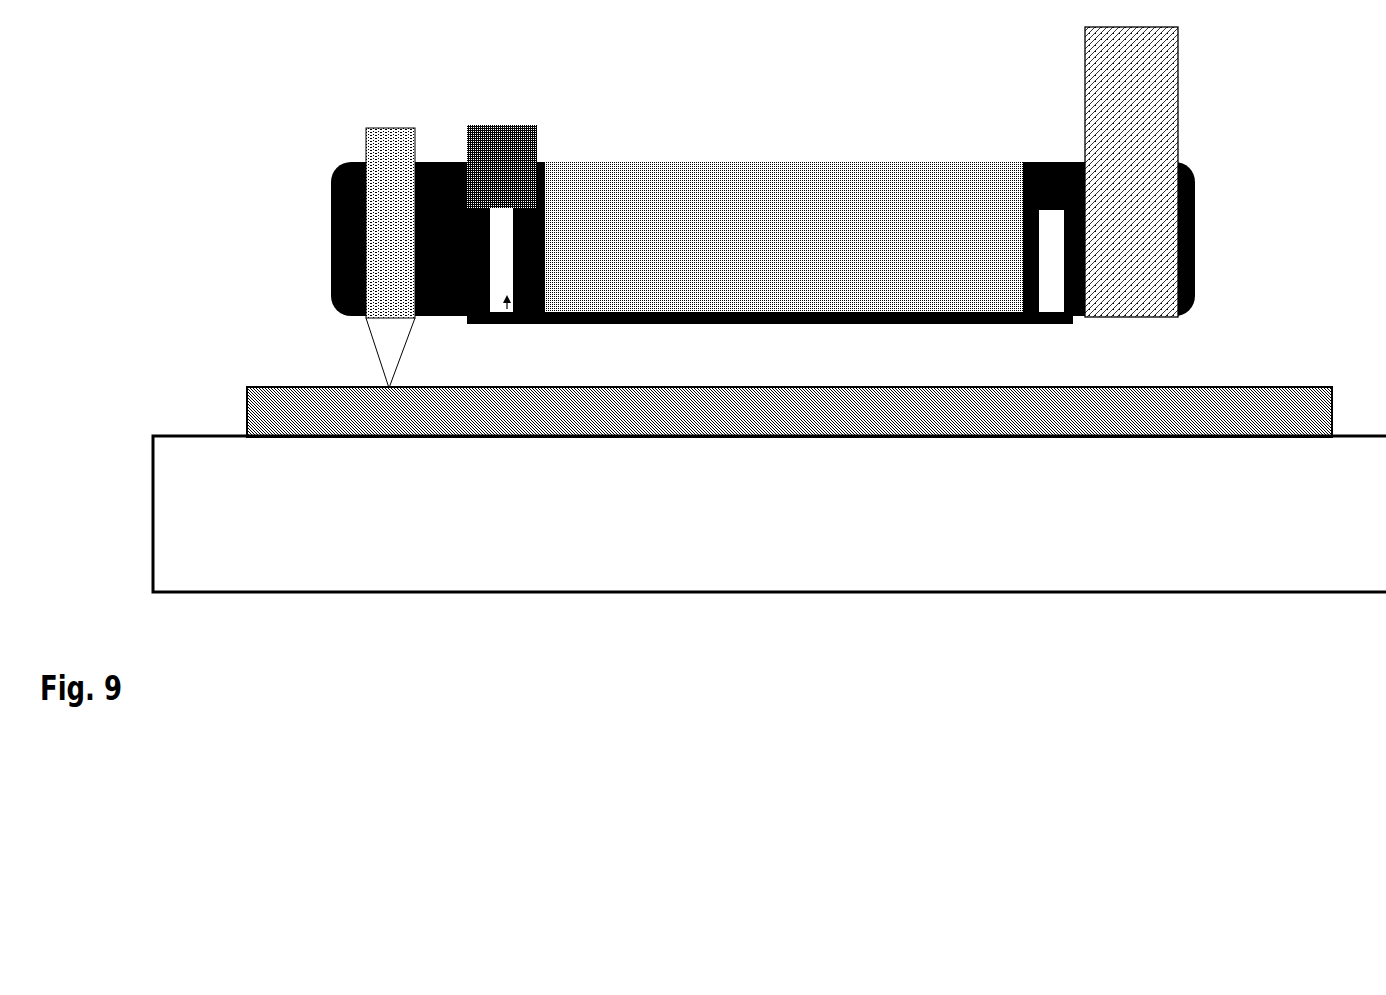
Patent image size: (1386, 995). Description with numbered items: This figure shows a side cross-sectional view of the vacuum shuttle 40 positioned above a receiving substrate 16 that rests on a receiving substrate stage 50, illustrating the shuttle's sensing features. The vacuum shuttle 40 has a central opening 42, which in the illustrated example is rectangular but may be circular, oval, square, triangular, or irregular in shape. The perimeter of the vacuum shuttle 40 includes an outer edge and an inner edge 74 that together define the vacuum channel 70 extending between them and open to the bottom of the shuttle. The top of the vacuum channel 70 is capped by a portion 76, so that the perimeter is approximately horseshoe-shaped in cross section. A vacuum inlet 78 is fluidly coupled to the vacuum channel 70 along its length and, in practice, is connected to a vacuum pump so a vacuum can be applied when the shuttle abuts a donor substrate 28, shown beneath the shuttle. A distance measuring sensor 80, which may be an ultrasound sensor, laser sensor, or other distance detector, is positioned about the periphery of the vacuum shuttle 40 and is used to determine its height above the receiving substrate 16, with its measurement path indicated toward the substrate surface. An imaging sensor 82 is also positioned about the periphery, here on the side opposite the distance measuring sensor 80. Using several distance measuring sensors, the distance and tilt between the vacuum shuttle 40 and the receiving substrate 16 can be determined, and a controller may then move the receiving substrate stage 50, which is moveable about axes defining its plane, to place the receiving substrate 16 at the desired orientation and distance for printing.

The receiving substrate 16 is at (922, 426).
The donor substrate 28 is at (885, 323).
The vacuum shuttle 40 is at (785, 128).
The central opening 42 is at (797, 251).
The receiving substrate stage 50 is at (950, 529).
The vacuum channel 70 is at (513, 324).
The inner edge 74 is at (1020, 234).
The portion 76 is at (1057, 162).
The vacuum inlet 78 is at (508, 128).
The distance measuring sensor 80 is at (380, 155).
The imaging sensor 82 is at (1098, 90).